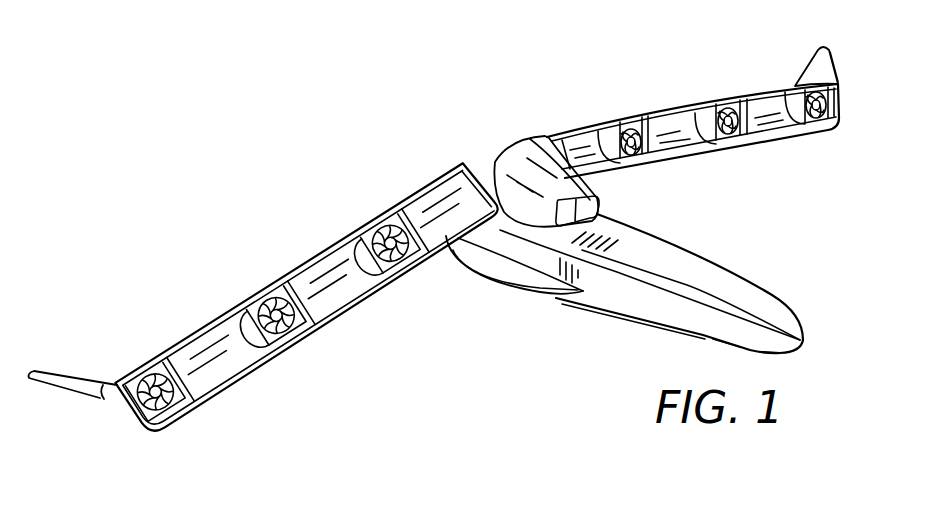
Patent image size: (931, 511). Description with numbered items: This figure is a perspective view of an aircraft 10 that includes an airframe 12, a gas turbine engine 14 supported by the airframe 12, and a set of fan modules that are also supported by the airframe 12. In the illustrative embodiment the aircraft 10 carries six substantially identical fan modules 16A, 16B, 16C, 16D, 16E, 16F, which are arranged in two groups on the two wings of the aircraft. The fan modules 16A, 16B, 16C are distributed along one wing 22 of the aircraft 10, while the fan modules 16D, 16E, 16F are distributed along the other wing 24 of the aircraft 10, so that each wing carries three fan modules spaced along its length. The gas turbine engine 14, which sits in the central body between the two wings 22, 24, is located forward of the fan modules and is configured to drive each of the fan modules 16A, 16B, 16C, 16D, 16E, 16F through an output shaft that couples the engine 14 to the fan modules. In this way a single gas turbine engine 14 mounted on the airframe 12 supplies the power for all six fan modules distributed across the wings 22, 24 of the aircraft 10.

The aircraft 10 is at (533, 68).
The airframe 12 is at (692, 290).
The gas turbine engine 14 is at (533, 182).
The fan module 16A is at (155, 427).
The fan module 16B is at (276, 356).
The fan module 16C is at (392, 282).
The fan module 16D is at (648, 166).
The fan module 16E is at (743, 143).
The fan module 16F is at (829, 135).
The wing 22 is at (328, 332).
The wing 24 is at (798, 152).